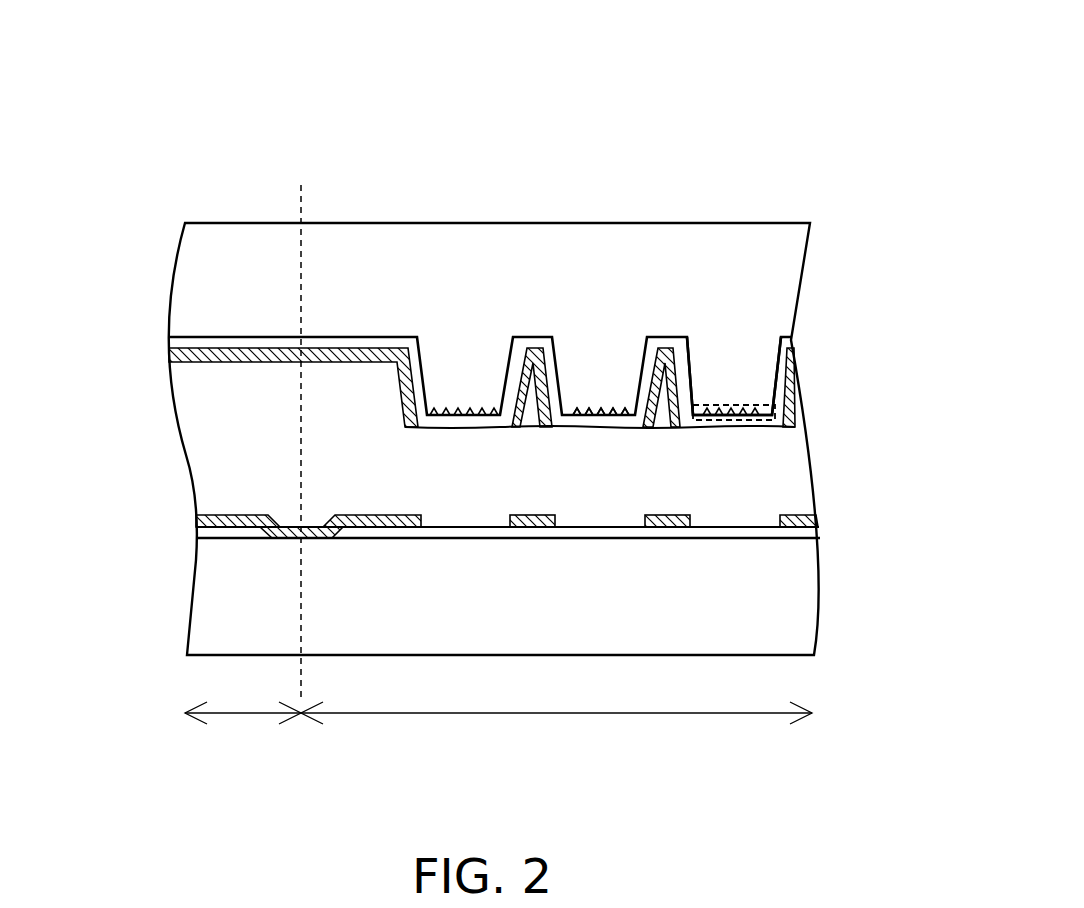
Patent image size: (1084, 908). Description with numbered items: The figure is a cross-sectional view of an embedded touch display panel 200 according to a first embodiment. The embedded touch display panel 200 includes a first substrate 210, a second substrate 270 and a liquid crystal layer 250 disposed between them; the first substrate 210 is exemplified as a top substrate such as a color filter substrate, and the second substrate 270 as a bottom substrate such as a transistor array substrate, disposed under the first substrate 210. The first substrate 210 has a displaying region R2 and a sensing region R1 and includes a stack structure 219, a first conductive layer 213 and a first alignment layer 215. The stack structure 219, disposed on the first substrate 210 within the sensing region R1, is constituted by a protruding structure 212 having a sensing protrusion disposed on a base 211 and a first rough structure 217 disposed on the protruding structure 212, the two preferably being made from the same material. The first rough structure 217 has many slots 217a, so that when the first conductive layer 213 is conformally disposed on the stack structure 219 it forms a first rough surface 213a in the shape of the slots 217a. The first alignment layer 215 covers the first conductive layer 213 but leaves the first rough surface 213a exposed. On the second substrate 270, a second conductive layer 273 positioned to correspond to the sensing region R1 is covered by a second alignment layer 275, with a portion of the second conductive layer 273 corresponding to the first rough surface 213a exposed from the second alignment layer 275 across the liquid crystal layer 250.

The embedded touch display panel 200 is at (925, 39).
The first substrate 210 is at (157, 223).
The base 211 is at (790, 283).
The protruding structure 212 is at (713, 345).
The first conductive layer 213 is at (795, 340).
The first rough surface 213a is at (602, 430).
The first alignment layer 215 is at (798, 378).
The first rough structure 217 is at (748, 395).
The slots 217a is at (586, 400).
The stack structure 219 is at (798, 172).
The liquid crystal layer 250 is at (800, 433).
The second substrate 270 is at (157, 515).
The second conductive layer 273 is at (817, 532).
The second alignment layer 275 is at (803, 516).
The sensing region R1 is at (556, 726).
The displaying region R2 is at (243, 726).